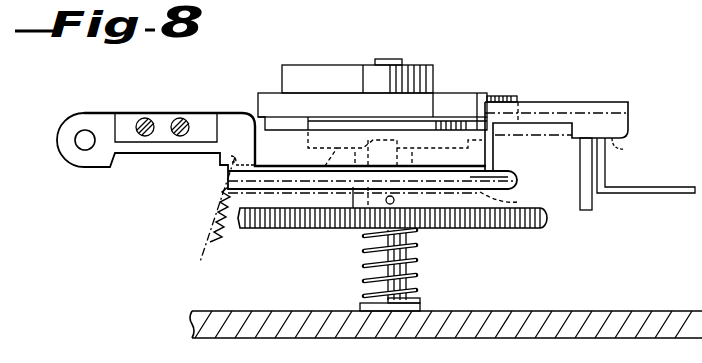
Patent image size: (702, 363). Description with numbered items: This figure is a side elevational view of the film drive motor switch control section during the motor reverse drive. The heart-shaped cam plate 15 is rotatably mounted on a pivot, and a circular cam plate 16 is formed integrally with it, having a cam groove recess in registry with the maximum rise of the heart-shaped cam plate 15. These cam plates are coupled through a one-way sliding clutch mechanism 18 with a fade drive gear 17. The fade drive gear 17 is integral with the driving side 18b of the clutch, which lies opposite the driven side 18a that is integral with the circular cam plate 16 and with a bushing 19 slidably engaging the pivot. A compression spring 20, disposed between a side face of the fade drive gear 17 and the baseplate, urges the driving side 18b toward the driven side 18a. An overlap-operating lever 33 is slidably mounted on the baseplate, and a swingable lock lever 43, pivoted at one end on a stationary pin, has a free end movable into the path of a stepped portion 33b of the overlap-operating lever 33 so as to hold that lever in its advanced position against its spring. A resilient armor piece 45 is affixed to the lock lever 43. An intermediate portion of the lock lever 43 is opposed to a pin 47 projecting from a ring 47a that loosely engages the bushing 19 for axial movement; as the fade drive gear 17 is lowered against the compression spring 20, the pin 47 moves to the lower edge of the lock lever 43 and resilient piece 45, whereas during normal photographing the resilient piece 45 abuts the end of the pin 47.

The heart-shaped cam plate 15 is at (433, 73).
The circular cam plate 16 is at (517, 96).
The fade drive gear 17 is at (527, 231).
The one-way sliding clutch mechanism 18 is at (442, 120).
The driven side of one-way sliding clutch mechanism 18a is at (470, 148).
The driving side of one-way sliding clutch mechanism 18b is at (389, 188).
The bushing 19 is at (433, 230).
The compression spring 20 is at (420, 272).
The overlap-operating lever 33 is at (660, 192).
The stepped portion 33b is at (605, 142).
The lock lever 43 is at (618, 124).
The resilient armor piece 45 is at (271, 187).
The pin 47 is at (388, 204).
The ring 47a is at (353, 192).